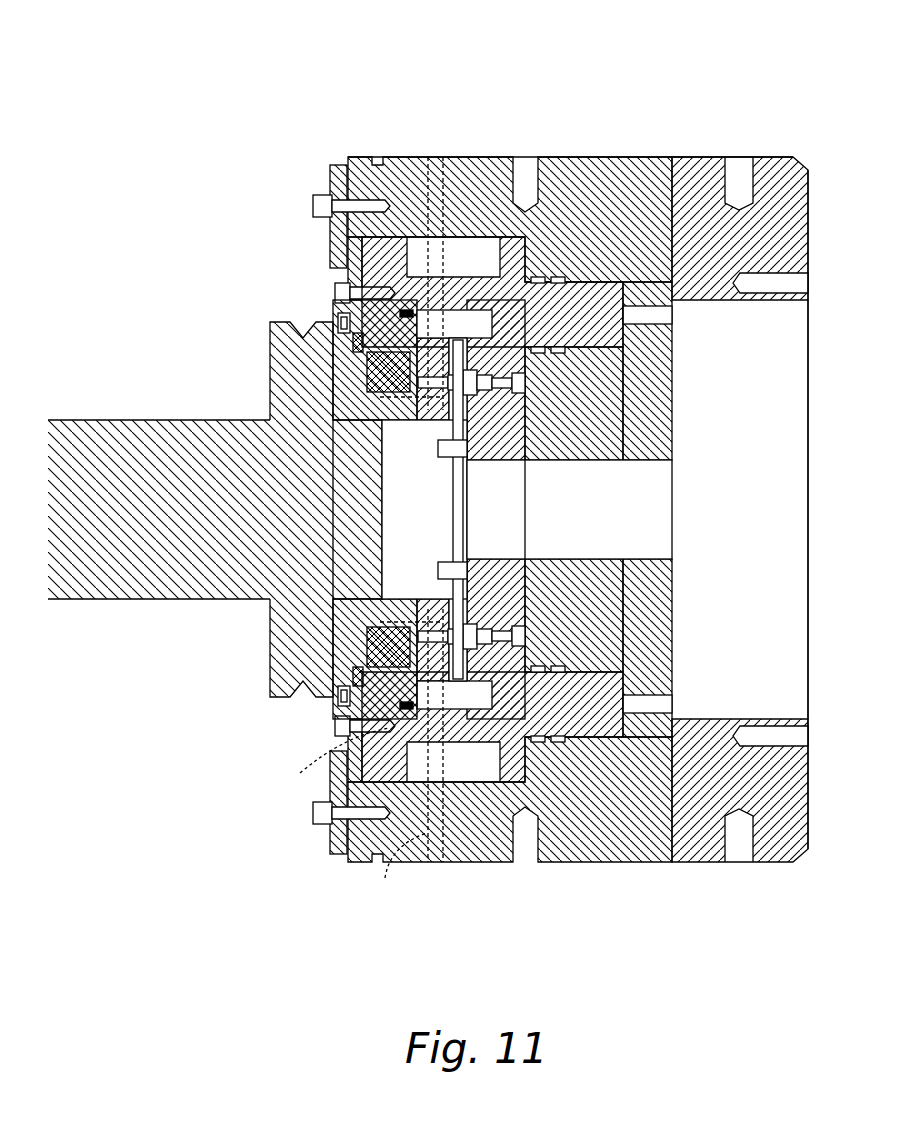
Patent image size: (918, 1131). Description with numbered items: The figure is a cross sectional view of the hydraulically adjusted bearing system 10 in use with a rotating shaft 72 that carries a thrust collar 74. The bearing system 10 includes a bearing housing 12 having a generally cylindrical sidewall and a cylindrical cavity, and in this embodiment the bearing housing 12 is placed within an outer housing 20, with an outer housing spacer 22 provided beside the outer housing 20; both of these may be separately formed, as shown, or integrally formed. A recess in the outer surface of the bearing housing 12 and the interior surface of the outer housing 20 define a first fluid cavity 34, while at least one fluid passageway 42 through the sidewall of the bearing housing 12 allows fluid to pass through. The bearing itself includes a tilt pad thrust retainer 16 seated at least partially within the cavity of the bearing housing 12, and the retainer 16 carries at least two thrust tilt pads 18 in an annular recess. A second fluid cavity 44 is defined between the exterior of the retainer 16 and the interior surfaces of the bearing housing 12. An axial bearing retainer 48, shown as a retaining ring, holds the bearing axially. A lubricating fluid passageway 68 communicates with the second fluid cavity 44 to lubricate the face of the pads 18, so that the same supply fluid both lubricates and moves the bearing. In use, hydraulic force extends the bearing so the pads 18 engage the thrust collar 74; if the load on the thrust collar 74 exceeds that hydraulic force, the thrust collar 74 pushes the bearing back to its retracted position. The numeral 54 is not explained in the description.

The hydraulically adjusted bearing system 10 is at (495, 100).
The bearing housing 12 is at (357, 752).
The tilt pad thrust bearing retainer 16 is at (340, 648).
The thrust tilt pads 18 is at (333, 682).
The outer housing 20 is at (420, 157).
The outer housing spacer 22 is at (692, 160).
The first fluid cavity 34 is at (480, 763).
The fluid passageway 42 is at (455, 830).
The second fluid cavity 44 is at (473, 692).
The axial bearing retainer 48 is at (345, 290).
The bore 54 is at (380, 840).
The lubricating fluid passageway 68 is at (335, 706).
The rotating shaft 72 is at (148, 455).
The thrust collar 74 is at (285, 365).